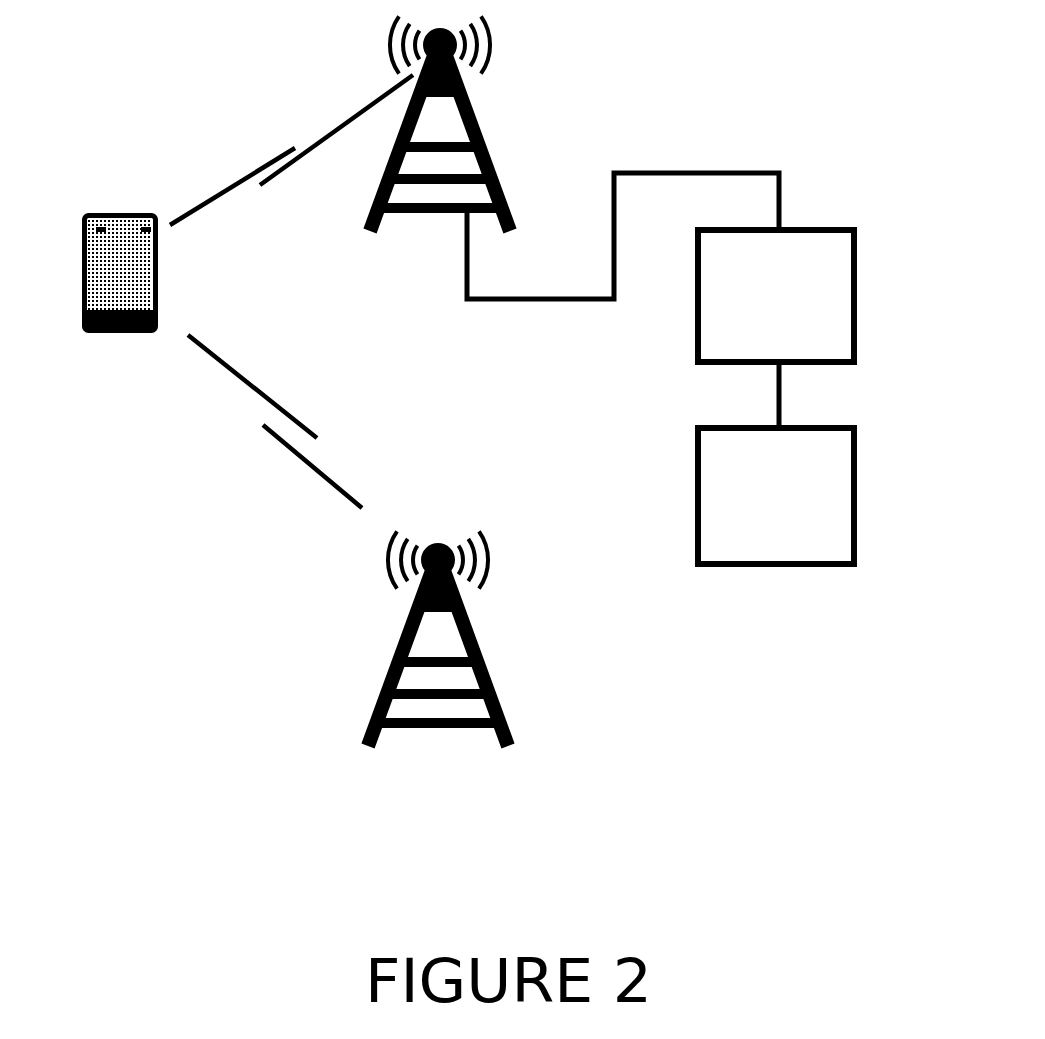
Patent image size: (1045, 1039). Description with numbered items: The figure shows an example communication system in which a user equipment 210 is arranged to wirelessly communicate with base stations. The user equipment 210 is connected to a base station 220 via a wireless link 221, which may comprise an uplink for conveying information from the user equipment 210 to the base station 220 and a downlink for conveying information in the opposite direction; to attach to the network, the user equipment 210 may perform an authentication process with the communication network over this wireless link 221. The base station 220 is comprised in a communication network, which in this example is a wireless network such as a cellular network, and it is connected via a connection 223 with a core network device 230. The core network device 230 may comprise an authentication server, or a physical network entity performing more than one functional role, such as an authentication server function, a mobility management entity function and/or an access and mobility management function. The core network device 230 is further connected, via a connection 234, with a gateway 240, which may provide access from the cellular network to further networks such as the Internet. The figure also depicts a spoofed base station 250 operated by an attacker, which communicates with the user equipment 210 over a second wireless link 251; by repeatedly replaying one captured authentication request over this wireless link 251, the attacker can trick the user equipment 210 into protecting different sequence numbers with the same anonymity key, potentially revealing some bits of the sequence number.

The user equipment 210 is at (104, 213).
The base station 220 is at (478, 160).
The wireless link 221 is at (290, 152).
The connection 223 is at (706, 172).
The core network device 230 is at (745, 312).
The connection 234 is at (782, 402).
The gateway 240 is at (743, 510).
The spoofed base station 250 is at (434, 730).
The wireless link 251 is at (292, 420).